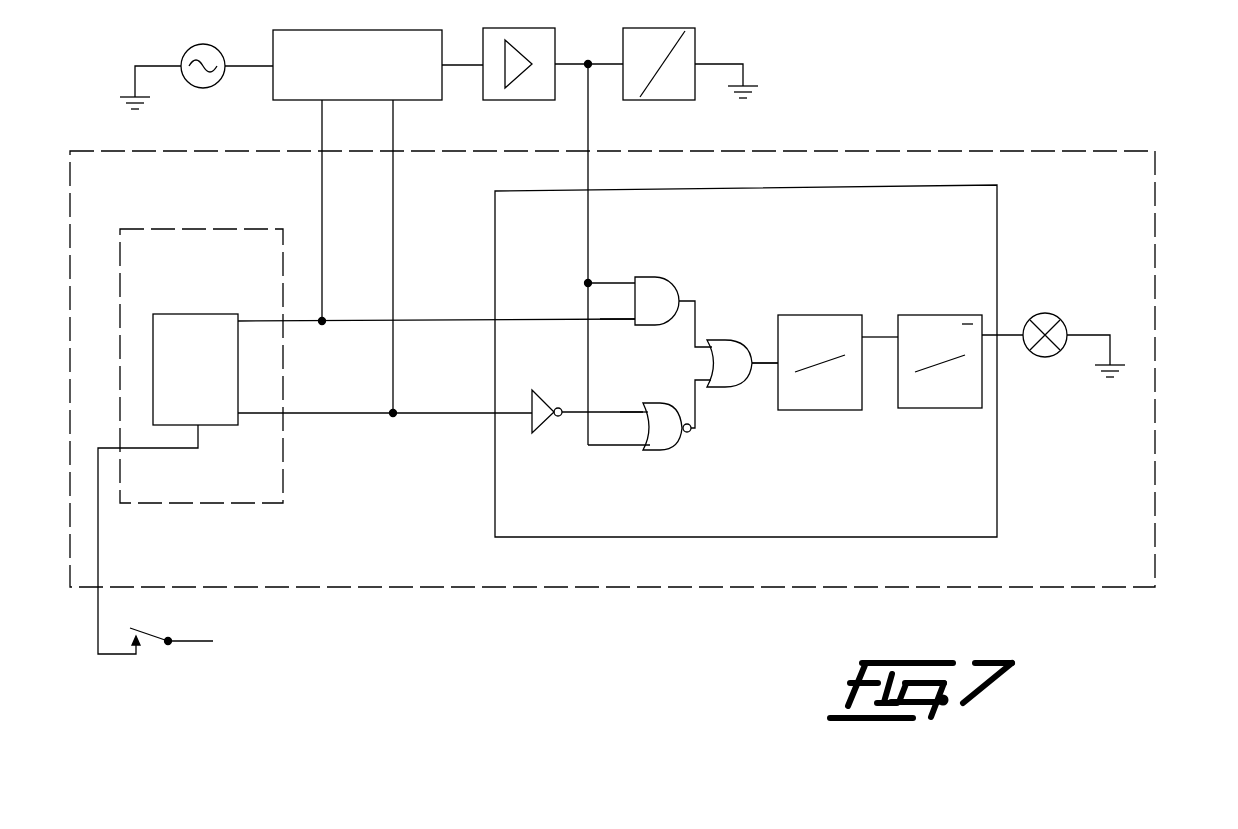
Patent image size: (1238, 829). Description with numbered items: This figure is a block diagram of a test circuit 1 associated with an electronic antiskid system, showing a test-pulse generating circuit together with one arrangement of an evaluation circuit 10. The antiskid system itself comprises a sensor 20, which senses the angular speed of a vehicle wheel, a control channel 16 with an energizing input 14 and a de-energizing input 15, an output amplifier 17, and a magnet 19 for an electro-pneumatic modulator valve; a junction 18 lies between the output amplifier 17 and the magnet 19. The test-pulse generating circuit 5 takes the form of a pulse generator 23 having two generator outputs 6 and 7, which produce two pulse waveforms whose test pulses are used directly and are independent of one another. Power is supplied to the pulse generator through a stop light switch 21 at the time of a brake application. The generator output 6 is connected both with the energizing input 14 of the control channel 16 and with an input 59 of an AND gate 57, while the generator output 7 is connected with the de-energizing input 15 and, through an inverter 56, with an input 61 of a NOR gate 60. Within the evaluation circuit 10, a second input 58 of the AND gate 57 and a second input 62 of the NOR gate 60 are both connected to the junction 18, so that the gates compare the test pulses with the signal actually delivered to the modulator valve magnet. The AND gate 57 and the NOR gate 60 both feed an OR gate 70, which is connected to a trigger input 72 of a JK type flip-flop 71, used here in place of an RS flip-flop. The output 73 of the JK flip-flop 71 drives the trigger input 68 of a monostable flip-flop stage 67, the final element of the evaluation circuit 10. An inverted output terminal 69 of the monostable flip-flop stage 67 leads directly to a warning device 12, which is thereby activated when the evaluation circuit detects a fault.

The test circuit 1 is at (458, 588).
The test-pulse generating circuit 5 is at (193, 503).
The generator output 6 is at (240, 320).
The generator output 7 is at (241, 416).
The evaluation circuit 10 is at (998, 213).
The warning device 12 is at (1052, 316).
The energizing input 14 is at (322, 101).
The de-energizing input 15 is at (393, 101).
The control channel 16 is at (336, 29).
The output amplifier 17 is at (520, 28).
The junction 18 is at (588, 60).
The magnet 19 is at (657, 28).
The sensor 20 is at (191, 51).
The stop light switch 21 is at (150, 635).
The pulse generator 23 is at (198, 313).
The inverter 56 is at (540, 397).
The AND gate 57 is at (666, 278).
The second input of AND gate 58 is at (635, 280).
The input of AND gate 59 is at (635, 322).
The NOR gate 60 is at (664, 448).
The input of NOR gate 61 is at (640, 407).
The second input of NOR gate 62 is at (640, 450).
The monostable flip-flop stage 67 is at (942, 314).
The trigger input 68 is at (896, 340).
The inverted output terminal 69 is at (983, 332).
The OR gate 70 is at (726, 342).
The JK flip-flop 71 is at (816, 314).
The trigger input 72 is at (778, 370).
The output 73 is at (863, 335).